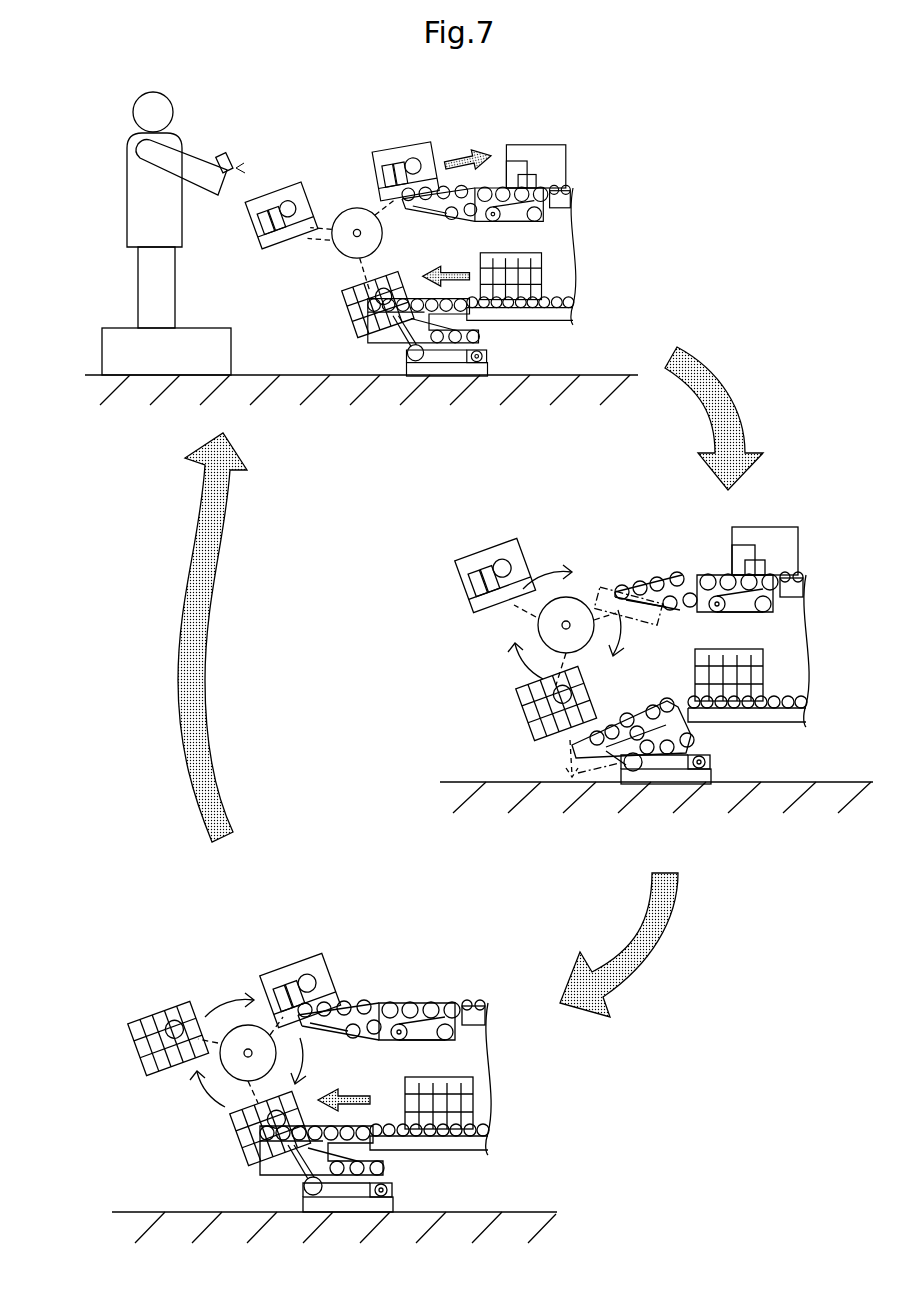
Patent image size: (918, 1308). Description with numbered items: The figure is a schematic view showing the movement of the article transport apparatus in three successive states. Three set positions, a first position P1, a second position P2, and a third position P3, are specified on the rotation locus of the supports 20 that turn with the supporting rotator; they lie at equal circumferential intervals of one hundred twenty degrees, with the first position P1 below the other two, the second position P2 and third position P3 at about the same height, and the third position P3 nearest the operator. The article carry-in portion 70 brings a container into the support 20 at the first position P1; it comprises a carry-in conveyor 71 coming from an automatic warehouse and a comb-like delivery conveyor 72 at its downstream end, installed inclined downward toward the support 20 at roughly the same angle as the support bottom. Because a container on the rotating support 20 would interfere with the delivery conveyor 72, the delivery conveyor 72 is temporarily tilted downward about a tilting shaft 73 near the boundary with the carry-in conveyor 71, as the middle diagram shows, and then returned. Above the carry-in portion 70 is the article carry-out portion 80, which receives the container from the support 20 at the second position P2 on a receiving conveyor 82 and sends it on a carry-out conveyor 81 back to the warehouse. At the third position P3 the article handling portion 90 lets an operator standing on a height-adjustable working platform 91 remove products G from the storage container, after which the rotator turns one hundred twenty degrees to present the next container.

The support 20 is at (275, 253).
The article carry-in portion 70 is at (583, 307).
The carry-in conveyor 71 is at (550, 315).
The delivery conveyor 72 is at (388, 333).
The tilting shaft 73 is at (488, 350).
The article carry-out portion 80 is at (582, 197).
The carry-out conveyor 81 is at (565, 205).
The receiving conveyor 82 is at (417, 213).
The article handling portion 90 is at (112, 240).
The working platform 91 is at (110, 345).
The product G is at (229, 153).
The first position P1 is at (302, 336).
The second position P2 is at (370, 145).
The third position P3 is at (211, 253).